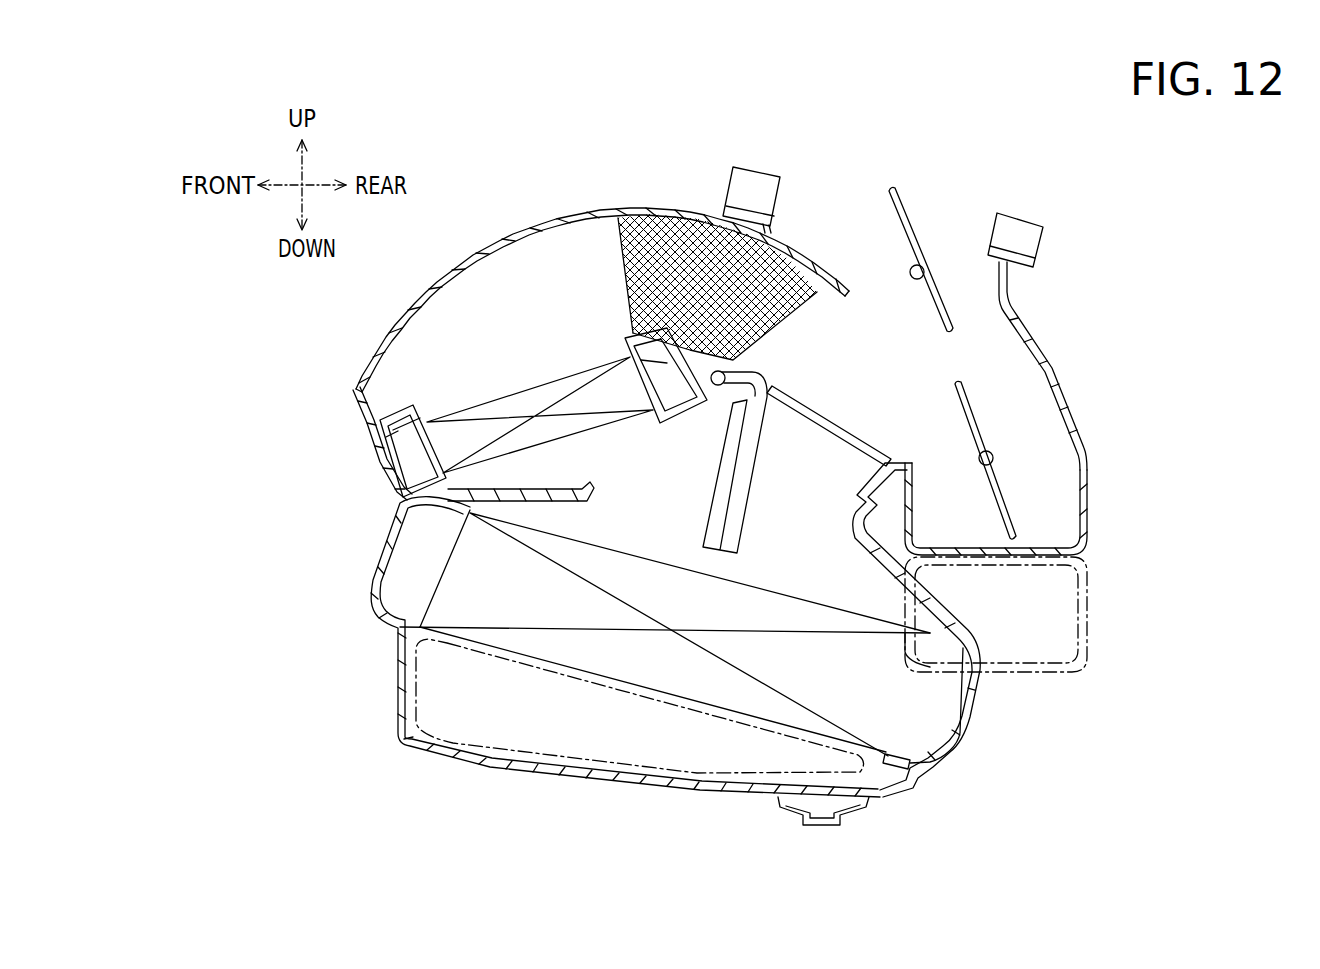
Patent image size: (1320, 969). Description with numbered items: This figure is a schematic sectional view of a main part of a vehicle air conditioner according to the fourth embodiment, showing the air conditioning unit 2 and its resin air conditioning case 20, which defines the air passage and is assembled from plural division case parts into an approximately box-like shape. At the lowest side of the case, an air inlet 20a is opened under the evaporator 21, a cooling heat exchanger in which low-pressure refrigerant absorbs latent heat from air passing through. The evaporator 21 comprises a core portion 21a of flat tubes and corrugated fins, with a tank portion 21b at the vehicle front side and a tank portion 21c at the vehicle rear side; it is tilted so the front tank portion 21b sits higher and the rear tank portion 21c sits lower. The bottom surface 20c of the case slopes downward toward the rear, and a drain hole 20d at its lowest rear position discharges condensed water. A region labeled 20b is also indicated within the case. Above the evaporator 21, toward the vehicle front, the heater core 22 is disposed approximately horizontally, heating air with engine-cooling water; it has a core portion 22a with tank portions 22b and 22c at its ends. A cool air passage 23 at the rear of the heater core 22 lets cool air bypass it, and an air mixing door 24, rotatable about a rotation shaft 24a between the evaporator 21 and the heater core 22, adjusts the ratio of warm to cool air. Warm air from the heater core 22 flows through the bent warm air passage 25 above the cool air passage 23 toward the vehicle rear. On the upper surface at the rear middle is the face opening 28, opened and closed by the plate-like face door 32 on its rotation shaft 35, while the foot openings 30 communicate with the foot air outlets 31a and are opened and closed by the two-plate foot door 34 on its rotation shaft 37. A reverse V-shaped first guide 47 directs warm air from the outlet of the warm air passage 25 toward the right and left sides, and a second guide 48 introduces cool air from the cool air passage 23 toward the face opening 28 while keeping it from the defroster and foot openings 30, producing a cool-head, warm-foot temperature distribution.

The air conditioning unit 2 is at (526, 205).
The air conditioning case 20 is at (442, 277).
The air inlet 20a is at (503, 753).
The tank top wall 20b is at (587, 740).
The bottom surface 20c is at (710, 795).
The drain hole 20d is at (863, 845).
The evaporator 21 is at (873, 717).
The core portion 21a is at (852, 691).
The tank portion 21b is at (432, 553).
The tank portion 21c is at (933, 705).
The heater core 22 is at (528, 400).
The core portion 22a is at (508, 396).
The tank portion 22b is at (410, 465).
The tank portion 22c is at (627, 350).
The cool air passage 23 is at (807, 463).
The air mixing door 24 is at (740, 460).
The rotation shaft 24a is at (716, 370).
The warm air passage 25 is at (494, 316).
The face opening 28 is at (960, 240).
The foot openings 30 is at (1037, 502).
The foot air outlets 31a is at (1047, 618).
The face door 32 is at (905, 210).
The foot door 34 is at (985, 427).
The rotation shaft 35 is at (913, 268).
The rotation shaft 37 is at (997, 458).
The first guide 47 is at (643, 245).
The second guide 48 is at (853, 437).